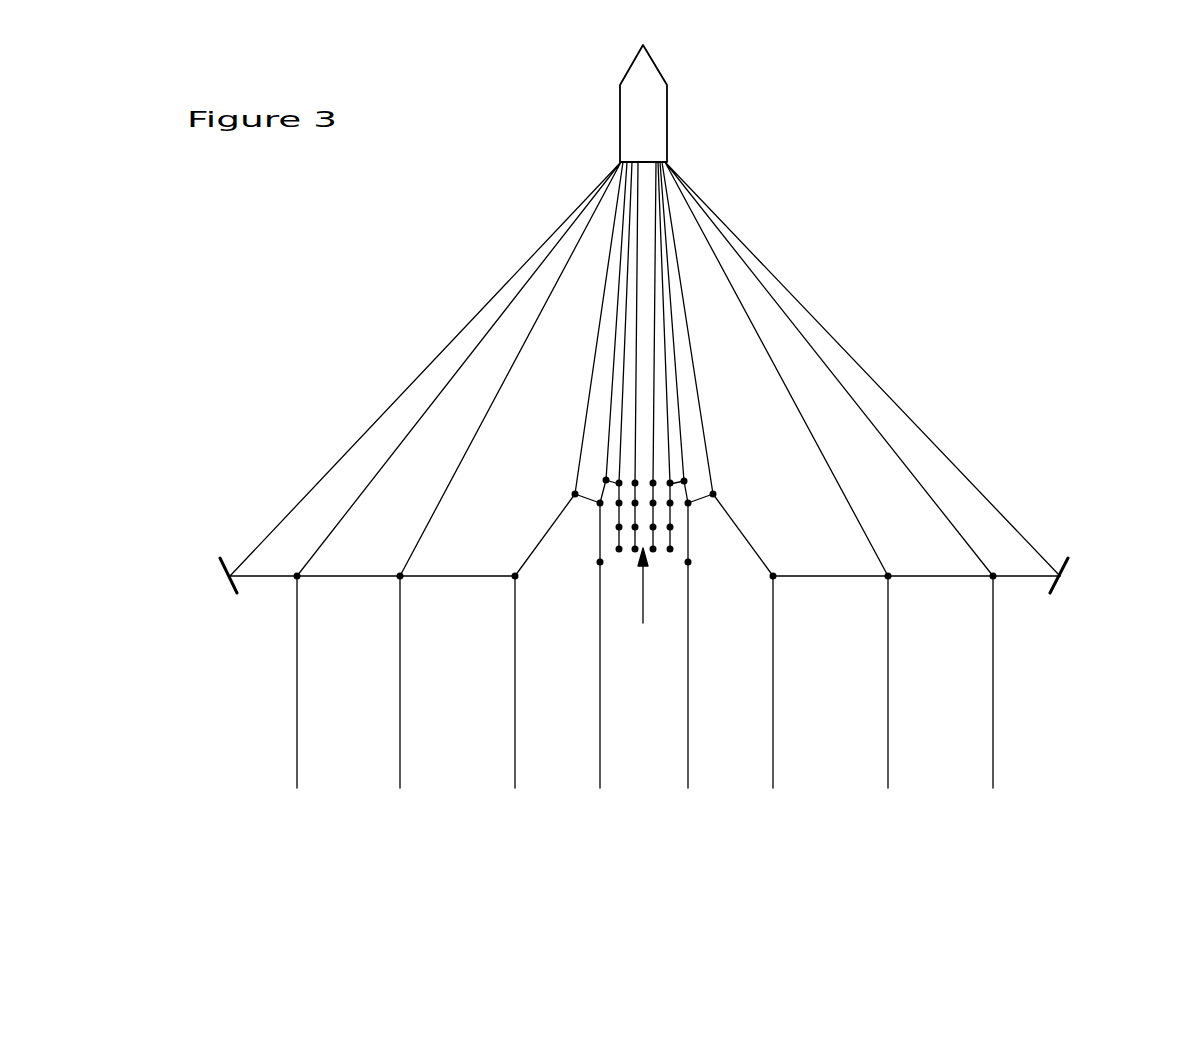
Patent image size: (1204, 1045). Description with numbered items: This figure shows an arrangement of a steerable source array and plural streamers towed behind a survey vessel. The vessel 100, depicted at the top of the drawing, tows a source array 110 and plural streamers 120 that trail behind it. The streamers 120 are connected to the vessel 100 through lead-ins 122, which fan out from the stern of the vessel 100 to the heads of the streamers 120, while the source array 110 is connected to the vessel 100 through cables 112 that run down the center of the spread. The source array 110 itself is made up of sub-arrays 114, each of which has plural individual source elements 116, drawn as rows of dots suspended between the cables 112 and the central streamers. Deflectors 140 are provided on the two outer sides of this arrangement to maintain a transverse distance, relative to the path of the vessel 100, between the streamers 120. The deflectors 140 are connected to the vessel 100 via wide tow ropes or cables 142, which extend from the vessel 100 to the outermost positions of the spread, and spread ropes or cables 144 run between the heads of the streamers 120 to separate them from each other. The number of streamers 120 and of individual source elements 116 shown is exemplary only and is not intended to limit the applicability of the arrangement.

The vessel 100 is at (650, 107).
The source array 110 is at (645, 600).
The cables 112 is at (637, 320).
The sub-arrays 114 is at (668, 538).
The individual source elements 116 is at (657, 480).
The streamers 120 is at (295, 698).
The lead-ins 122 is at (470, 448).
The deflectors 140 is at (225, 568).
The wide tow ropes or cables 142 is at (370, 428).
The spread ropes or cables 144 is at (457, 578).